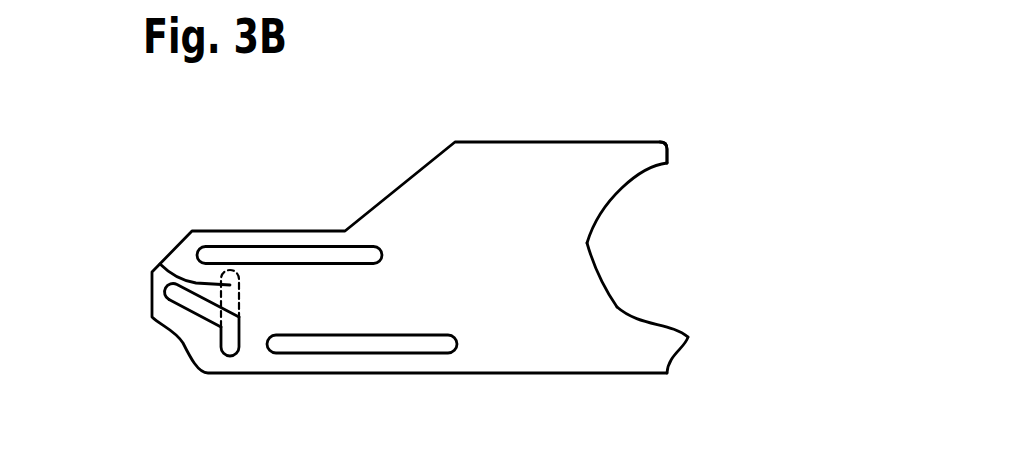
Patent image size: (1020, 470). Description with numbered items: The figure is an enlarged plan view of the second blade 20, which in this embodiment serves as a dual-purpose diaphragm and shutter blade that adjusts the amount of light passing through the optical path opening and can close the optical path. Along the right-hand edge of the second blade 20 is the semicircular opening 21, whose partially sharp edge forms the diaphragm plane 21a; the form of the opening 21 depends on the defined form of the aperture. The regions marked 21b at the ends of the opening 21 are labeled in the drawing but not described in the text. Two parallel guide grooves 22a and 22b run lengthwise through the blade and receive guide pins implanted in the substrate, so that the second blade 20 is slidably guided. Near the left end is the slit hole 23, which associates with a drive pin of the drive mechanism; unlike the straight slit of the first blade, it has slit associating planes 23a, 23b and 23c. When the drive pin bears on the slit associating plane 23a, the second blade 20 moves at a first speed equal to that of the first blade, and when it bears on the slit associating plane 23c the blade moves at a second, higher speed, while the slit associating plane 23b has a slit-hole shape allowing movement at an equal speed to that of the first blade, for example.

The second blade 20 is at (602, 140).
The semicircular opening 21 is at (606, 208).
The diaphragm plane 21a is at (592, 255).
The guide portion 21b is at (655, 146).
The guide groove 22a is at (253, 255).
The guide groove 22b is at (368, 347).
The slit hole 23 is at (207, 304).
The slit associating plane 23a is at (232, 356).
The slit associating plane 23b is at (177, 278).
The slit associating plane 23c is at (185, 302).